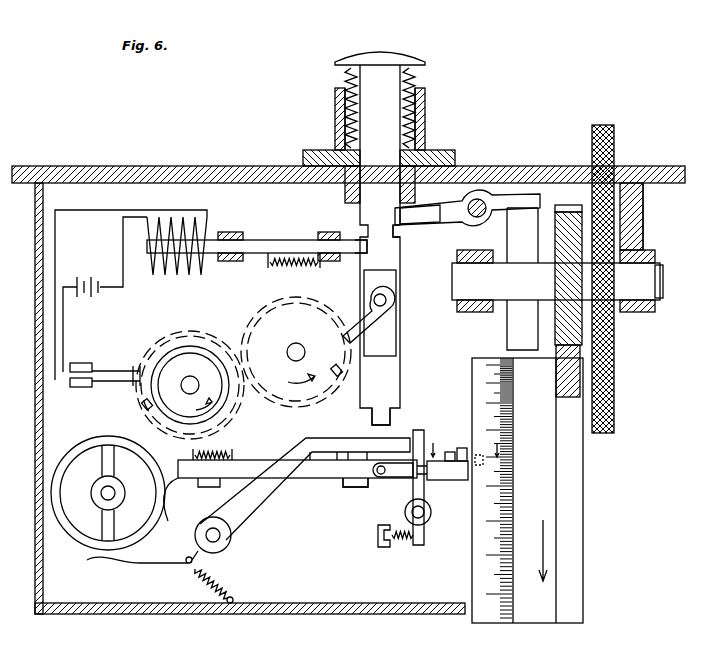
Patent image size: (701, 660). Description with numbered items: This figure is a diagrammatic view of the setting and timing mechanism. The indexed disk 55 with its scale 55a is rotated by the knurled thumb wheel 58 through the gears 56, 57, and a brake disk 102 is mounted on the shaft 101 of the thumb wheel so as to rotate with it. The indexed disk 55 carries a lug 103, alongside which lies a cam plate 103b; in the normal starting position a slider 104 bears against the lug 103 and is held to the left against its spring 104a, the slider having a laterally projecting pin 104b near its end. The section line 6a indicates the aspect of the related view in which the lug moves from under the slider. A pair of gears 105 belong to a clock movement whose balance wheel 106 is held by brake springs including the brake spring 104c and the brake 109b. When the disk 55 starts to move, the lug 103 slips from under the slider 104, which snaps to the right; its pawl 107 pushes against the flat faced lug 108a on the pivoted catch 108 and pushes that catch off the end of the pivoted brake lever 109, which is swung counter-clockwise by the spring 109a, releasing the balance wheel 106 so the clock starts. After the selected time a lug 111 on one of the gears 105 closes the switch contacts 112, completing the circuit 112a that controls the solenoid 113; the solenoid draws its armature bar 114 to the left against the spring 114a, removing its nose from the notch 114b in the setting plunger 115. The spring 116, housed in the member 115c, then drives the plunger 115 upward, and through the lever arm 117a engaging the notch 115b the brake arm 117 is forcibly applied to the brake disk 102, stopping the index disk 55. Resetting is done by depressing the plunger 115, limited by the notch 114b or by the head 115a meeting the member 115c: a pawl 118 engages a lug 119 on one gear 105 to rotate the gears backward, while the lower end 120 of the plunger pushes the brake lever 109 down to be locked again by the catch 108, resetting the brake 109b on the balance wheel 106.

The indexed disk 55 is at (552, 527).
The scale 55a is at (513, 510).
The gear 56 is at (578, 368).
The gear 57 is at (568, 215).
The knurled thumb wheel 58 is at (616, 345).
The shaft 101 is at (557, 281).
The brake disk 102 is at (520, 330).
The lug 103 is at (463, 482).
The cam plate 103b is at (452, 452).
The slider 104 is at (315, 478).
The spring 104a is at (220, 452).
The laterally projecting pin 104b is at (436, 480).
The brake spring 104c is at (170, 515).
The pair of gears 105 is at (250, 322).
The balance wheel 106 is at (94, 445).
The pawl 107 is at (372, 485).
The catch 108 is at (422, 432).
The flat faced lug 108a is at (398, 478).
The brake lever 109 is at (348, 440).
The spring 109a is at (222, 585).
The brake 109b is at (150, 563).
The lug 111 is at (143, 390).
The switch contacts 112 is at (104, 372).
The circuit 112a is at (60, 320).
The solenoid 113 is at (180, 272).
The armature bar 114 is at (258, 248).
The spring 114a is at (292, 268).
The notch 114b is at (358, 236).
The setting plunger 115 is at (380, 245).
The head 115a is at (410, 62).
The notch 115b is at (400, 240).
The housing member 115c is at (425, 108).
The spring 116 is at (416, 82).
The brake arm 117 is at (505, 202).
The lever arm 117a is at (435, 222).
The pawl 118 is at (365, 328).
The lug 119 is at (337, 366).
The lower end of plunger 120 is at (388, 430).
The section line 6a is at (467, 443).